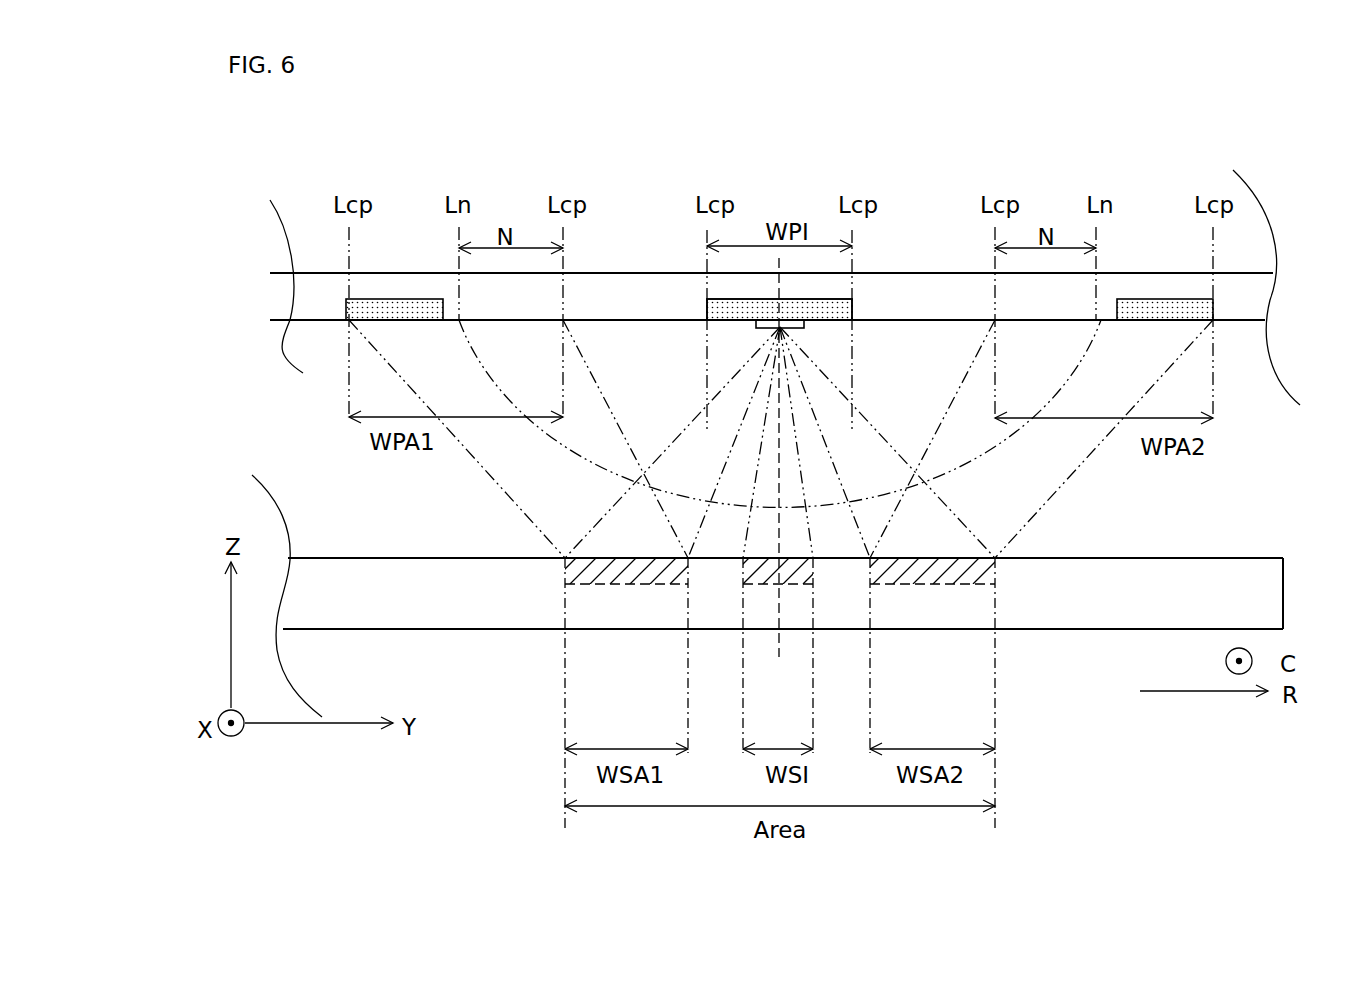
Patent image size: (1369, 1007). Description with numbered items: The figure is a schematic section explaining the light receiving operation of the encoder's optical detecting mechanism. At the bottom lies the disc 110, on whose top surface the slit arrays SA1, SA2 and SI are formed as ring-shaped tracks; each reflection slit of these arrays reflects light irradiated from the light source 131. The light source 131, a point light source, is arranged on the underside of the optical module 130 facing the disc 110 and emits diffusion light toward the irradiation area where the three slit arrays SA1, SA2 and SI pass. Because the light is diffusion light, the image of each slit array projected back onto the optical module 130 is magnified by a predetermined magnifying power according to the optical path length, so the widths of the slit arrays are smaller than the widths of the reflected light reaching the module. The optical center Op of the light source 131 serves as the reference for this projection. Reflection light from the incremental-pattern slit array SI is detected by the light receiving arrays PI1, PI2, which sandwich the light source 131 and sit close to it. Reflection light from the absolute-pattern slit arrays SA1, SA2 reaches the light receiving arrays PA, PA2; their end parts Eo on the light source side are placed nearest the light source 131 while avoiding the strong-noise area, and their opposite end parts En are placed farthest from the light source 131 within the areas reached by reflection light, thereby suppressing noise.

The disc 110 is at (447, 629).
The optical module 130 is at (630, 273).
The light source 131 is at (777, 323).
The light receiving array for absolute signal PA is at (398, 298).
The light receiving array for absolute signal PA2 is at (1163, 298).
The light receiving array PI1 is at (855, 298).
The light receiving array PI2 is at (779, 309).
The end part En is at (346, 322).
The end part Eo is at (443, 321).
The slit array SA1 is at (629, 585).
The slit array SA2 is at (928, 585).
The slit array SI is at (751, 587).
The optical center Op is at (784, 476).